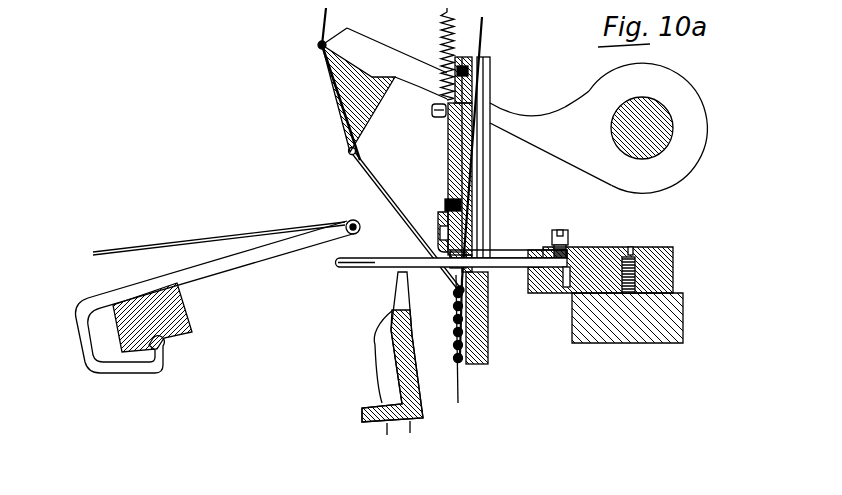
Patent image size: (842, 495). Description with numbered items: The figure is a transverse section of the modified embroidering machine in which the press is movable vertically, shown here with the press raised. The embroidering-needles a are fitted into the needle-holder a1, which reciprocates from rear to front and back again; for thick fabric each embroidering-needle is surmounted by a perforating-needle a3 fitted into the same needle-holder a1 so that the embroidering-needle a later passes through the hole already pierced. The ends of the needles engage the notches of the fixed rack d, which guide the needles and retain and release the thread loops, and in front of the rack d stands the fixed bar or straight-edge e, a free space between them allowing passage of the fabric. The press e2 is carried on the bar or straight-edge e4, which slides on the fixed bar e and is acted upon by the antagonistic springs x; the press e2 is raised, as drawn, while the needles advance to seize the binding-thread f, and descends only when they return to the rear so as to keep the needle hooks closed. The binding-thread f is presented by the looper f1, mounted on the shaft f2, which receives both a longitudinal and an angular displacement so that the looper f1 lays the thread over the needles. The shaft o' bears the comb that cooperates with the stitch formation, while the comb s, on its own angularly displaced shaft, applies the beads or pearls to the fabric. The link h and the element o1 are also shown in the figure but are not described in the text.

The antagonistic spring x is at (442, 28).
The link h is at (336, 94).
The shaft o' is at (514, 110).
The pivot shaft o1 is at (670, 125).
The bar or straight-edge e4 is at (448, 157).
The fixed bar or straight-edge e is at (472, 201).
The press e2 is at (443, 222).
The perforating-needle a3 is at (522, 254).
The needle-holder a1 is at (674, 270).
The needle a is at (378, 269).
The comb s is at (405, 299).
The fixed rack d is at (490, 329).
The binding-thread f is at (219, 237).
The looper f1 is at (252, 255).
The shaft f2 is at (190, 318).